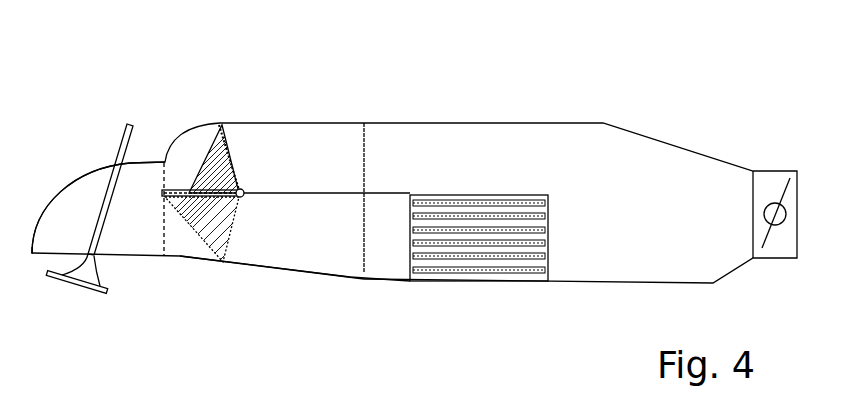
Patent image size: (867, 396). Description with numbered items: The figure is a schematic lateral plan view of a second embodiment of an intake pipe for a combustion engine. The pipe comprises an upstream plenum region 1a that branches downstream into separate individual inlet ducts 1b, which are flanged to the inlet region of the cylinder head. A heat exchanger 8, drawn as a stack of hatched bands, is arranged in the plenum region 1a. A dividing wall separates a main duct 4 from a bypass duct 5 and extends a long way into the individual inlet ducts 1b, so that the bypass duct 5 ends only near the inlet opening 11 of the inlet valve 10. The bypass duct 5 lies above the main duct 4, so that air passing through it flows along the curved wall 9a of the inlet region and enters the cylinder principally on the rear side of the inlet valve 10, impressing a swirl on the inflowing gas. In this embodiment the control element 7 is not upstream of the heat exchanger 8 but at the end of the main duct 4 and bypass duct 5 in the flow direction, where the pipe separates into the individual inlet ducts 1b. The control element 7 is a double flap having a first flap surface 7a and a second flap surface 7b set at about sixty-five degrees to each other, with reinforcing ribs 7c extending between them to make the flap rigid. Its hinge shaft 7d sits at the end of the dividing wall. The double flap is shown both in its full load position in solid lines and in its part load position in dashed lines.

The plenum region 1a is at (502, 146).
The individual inlet ducts 1b is at (312, 137).
The main duct 4 is at (343, 258).
The bypass duct 5 is at (387, 157).
The control element 7 is at (245, 170).
The first flap surface 7a is at (220, 143).
The second flap surface 7b is at (175, 190).
The reinforcing ribs 7c is at (212, 173).
The hinge shaft 7d is at (243, 197).
The heat exchanger 8 is at (465, 265).
The curved wall 9a is at (82, 182).
The inlet valve 10 is at (117, 152).
The inlet opening 11 is at (113, 295).